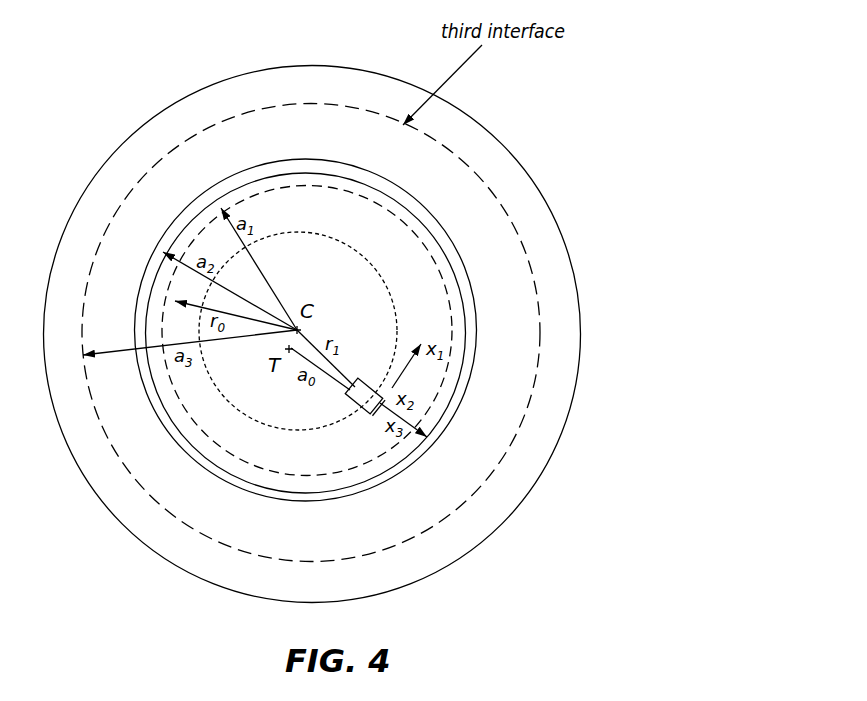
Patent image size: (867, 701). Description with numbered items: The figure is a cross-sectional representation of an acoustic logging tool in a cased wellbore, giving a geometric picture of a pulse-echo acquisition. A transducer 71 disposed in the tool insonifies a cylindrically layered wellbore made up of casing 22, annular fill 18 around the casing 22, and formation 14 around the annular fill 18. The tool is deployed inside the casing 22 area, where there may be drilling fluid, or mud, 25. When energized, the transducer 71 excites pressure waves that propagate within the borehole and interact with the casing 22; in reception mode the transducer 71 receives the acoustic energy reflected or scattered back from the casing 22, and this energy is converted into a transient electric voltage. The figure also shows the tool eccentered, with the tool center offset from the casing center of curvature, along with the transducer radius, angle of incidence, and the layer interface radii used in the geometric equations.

The formation 14 is at (322, 99).
The annular fill 18 is at (322, 147).
The casing 22 is at (200, 213).
The drilling fluid 25 is at (322, 231).
The transducer 71 is at (357, 410).